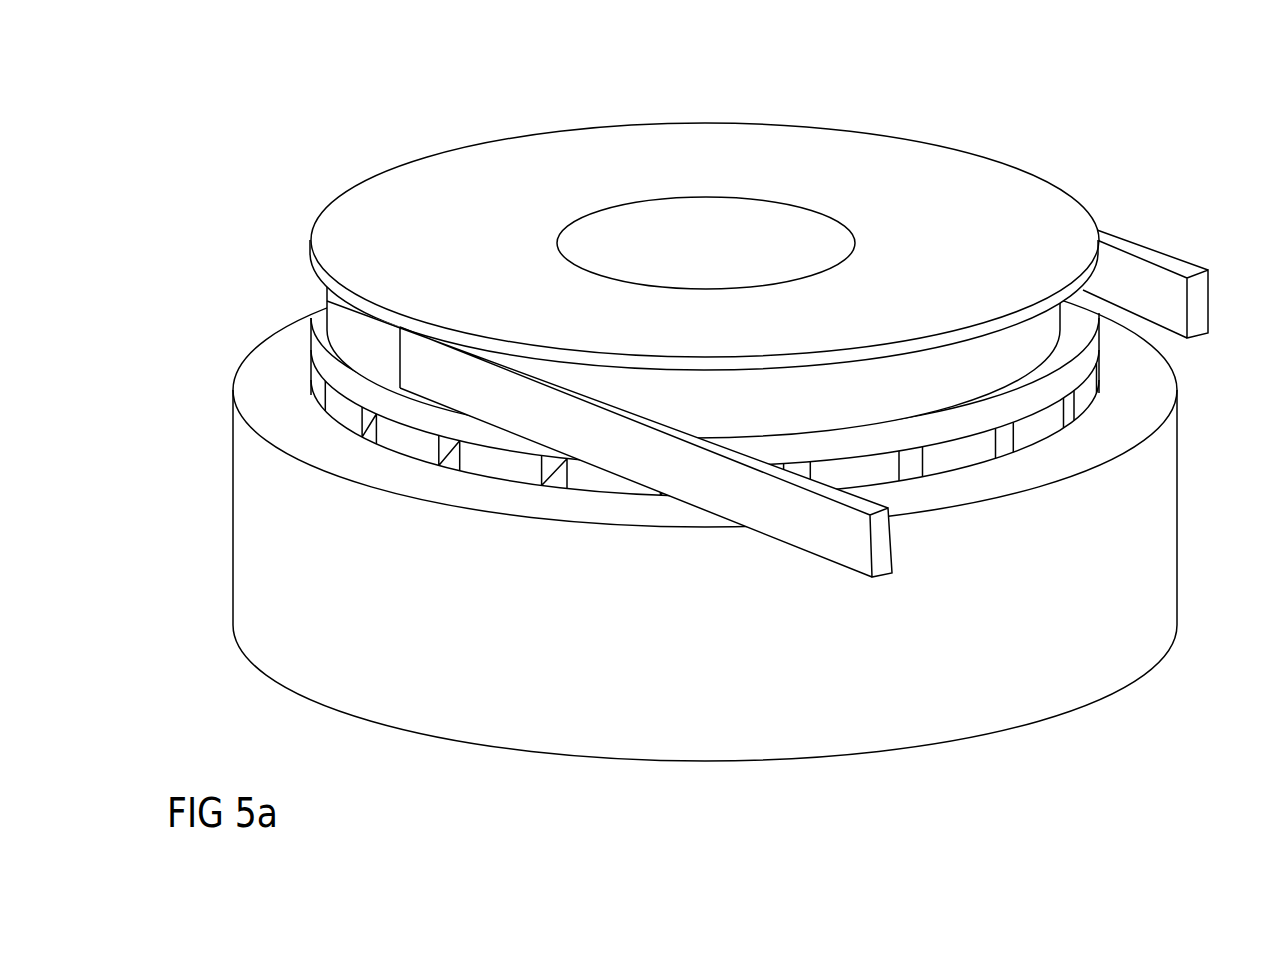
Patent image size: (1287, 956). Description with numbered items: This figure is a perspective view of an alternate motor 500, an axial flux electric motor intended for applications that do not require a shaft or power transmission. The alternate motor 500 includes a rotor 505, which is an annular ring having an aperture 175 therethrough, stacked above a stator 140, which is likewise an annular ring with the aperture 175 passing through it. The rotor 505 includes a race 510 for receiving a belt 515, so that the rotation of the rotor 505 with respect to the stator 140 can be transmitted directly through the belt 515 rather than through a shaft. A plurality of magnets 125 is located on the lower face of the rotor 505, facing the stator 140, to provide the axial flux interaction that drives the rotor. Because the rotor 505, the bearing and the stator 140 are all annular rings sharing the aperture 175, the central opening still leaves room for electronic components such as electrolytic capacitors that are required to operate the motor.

The alternate motor 500 is at (744, 427).
The rotor 505 is at (704, 210).
The aperture 175 is at (684, 237).
The belt 515 is at (1143, 287).
The race 510 is at (917, 379).
The magnets 125 is at (517, 460).
The stator 140 is at (968, 680).